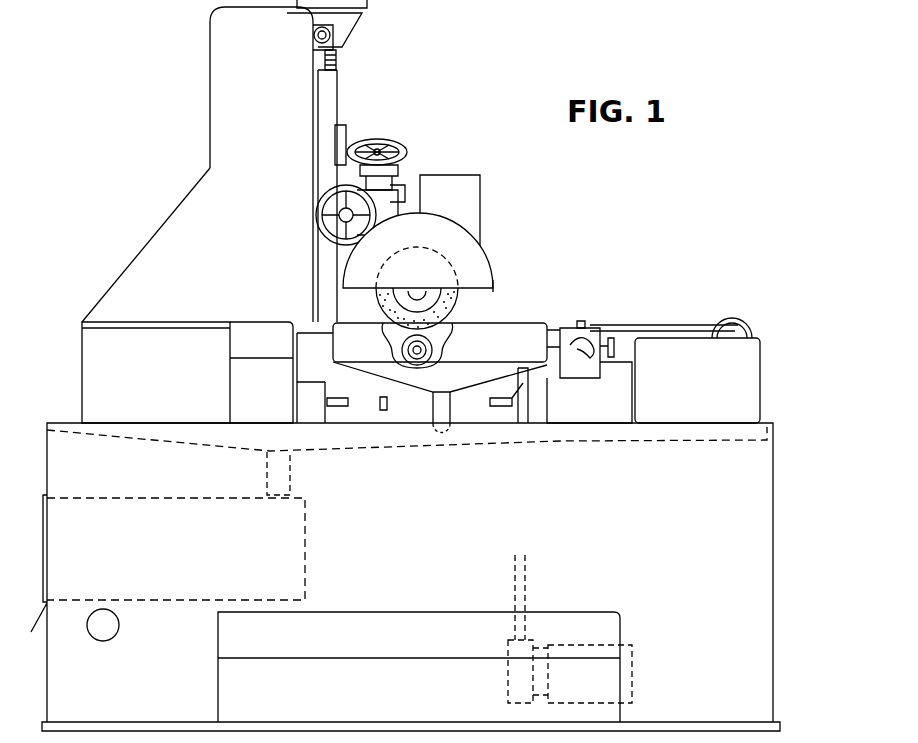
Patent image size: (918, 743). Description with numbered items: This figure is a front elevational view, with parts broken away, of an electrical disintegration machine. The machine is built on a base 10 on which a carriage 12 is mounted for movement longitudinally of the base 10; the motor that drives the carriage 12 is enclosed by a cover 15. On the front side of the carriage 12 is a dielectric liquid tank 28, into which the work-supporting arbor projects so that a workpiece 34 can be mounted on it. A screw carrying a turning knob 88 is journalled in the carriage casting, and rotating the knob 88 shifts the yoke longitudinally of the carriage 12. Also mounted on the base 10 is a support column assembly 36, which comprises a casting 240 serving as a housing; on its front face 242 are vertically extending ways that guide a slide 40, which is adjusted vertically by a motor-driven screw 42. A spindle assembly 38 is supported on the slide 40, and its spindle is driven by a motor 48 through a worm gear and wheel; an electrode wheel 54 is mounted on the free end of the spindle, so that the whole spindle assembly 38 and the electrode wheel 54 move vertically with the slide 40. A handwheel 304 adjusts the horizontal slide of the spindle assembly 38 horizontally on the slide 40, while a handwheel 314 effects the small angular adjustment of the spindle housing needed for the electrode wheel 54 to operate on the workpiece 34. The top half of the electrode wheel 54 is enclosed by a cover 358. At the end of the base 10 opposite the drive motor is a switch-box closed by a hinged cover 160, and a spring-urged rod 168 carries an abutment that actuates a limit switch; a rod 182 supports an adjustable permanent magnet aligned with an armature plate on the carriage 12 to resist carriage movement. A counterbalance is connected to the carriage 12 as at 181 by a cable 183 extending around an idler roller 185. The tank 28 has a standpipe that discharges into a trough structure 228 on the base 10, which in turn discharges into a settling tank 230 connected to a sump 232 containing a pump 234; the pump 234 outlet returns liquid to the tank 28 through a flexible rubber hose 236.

The base 10 is at (763, 594).
The carriage 12 is at (589, 330).
The cover 15 is at (708, 348).
The dielectric liquid tank 28 is at (523, 326).
The workpiece 34 is at (433, 350).
The support column assembly 36 is at (226, 72).
The spindle assembly 38 is at (413, 147).
The slide 40 is at (345, 136).
The screw 42 is at (338, 69).
The motor 48 is at (473, 207).
The electrode wheel 54 is at (459, 300).
The turning knob 88 is at (615, 345).
The hinged cover 160 is at (178, 345).
The rod 168 is at (349, 408).
The connection of counterbalance cable to carriage 181 is at (581, 320).
The rod 182 is at (501, 408).
The cable 183 is at (679, 325).
The idler roller 185 is at (750, 329).
The trough structure 228 is at (378, 443).
The settling tank 230 is at (305, 558).
The sump 232 is at (416, 612).
The pump 234 is at (637, 656).
The flexible rubber hose 236 is at (568, 328).
The casting 240 is at (217, 157).
The front face 242 is at (313, 118).
The handwheel 304 is at (317, 226).
The handwheel 314 is at (388, 141).
The cover 358 is at (490, 262).